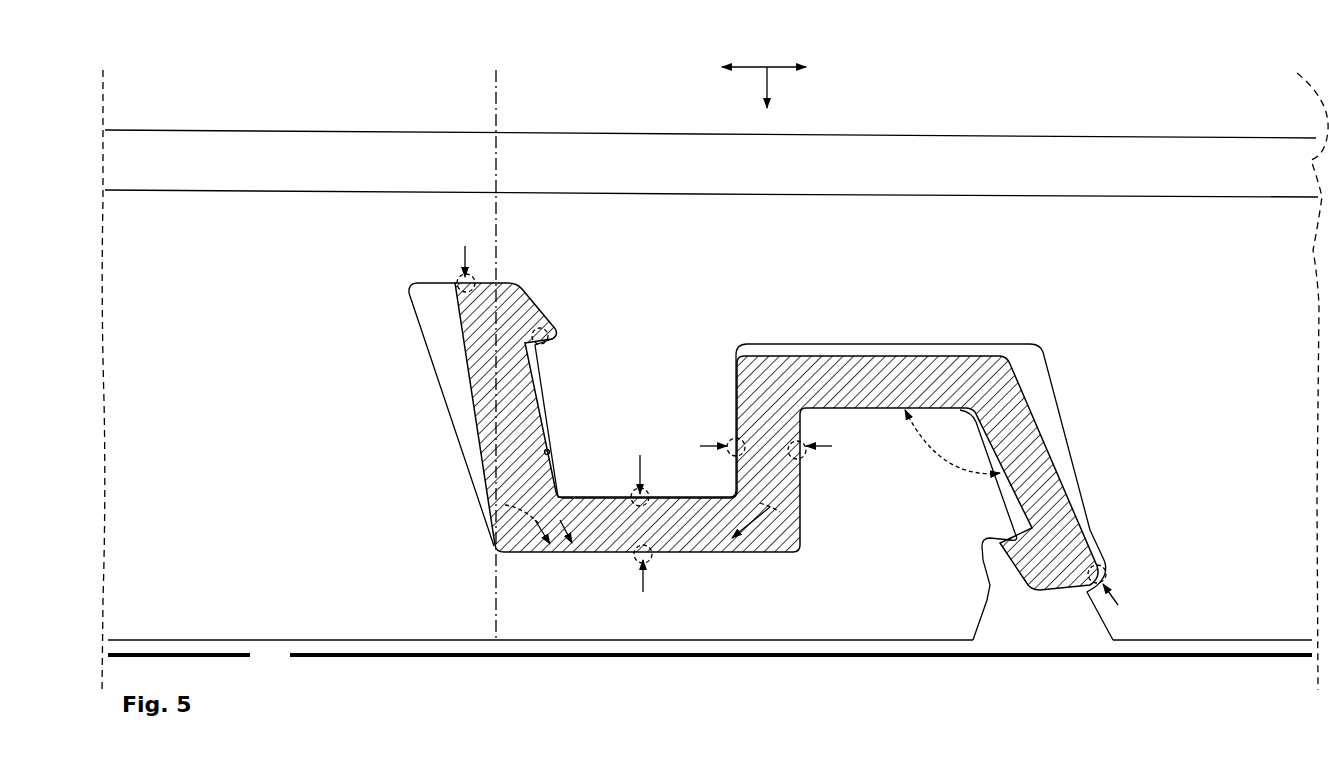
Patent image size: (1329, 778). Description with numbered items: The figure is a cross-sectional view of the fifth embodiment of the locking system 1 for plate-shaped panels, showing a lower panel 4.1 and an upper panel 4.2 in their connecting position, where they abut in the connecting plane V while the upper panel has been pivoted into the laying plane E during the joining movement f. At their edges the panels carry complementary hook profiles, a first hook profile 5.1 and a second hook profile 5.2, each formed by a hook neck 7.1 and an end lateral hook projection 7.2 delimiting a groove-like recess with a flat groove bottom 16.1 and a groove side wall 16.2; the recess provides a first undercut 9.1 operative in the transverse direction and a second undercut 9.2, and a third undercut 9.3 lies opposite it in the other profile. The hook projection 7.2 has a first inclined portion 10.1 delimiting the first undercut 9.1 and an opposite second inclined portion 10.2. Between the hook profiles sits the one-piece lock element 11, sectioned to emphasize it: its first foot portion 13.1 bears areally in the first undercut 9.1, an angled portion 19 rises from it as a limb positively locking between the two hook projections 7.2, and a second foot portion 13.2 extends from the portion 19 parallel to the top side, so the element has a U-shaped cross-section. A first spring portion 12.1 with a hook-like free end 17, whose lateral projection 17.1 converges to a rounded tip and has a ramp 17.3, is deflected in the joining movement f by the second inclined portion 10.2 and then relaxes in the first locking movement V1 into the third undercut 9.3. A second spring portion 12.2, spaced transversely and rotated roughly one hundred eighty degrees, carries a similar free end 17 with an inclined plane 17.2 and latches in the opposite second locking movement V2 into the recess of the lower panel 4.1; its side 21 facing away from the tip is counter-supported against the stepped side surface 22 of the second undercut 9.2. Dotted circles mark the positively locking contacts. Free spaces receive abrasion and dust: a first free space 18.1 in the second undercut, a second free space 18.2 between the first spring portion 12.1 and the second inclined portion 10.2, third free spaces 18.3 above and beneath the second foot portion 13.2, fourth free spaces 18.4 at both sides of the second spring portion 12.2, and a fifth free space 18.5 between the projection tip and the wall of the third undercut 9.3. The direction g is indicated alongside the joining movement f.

The locking system 1 is at (147, 88).
The lower panel 4.1 is at (213, 108).
The upper panel 4.2 is at (1198, 112).
The first hook profile 5.1 is at (283, 128).
The second hook profile 5.2 is at (1128, 127).
The hook neck 7.1 is at (655, 179).
The hook projection 7.2 is at (892, 186).
The first undercut 9.1 is at (543, 405).
The second undercut 9.2 is at (410, 290).
The third undercut 9.3 is at (535, 338).
The first inclined portion 10.1 is at (778, 475).
The second inclined portion 10.2 is at (550, 452).
The lock element 11 is at (446, 276).
The first spring portion 12.1 is at (521, 283).
The second spring portion 12.2 is at (1043, 430).
The first foot portion 13.1 is at (603, 493).
The second foot portion 13.2 is at (917, 357).
The groove bottom 16.1 is at (437, 357).
The groove side wall 16.2 is at (844, 507).
The free end 17 is at (1092, 530).
The lateral projection 17.1 is at (538, 298).
The inclined plane 17.2 is at (558, 330).
The ramp 17.3 is at (537, 323).
The first free space 18.1 is at (418, 308).
The second free space 18.2 is at (546, 435).
The third free space 18.3 is at (848, 412).
The fourth free space 18.4 is at (1025, 512).
The fifth free space 18.5 is at (990, 568).
The portion 19 is at (737, 410).
The side 21 is at (1100, 548).
The side surface 22 is at (1108, 572).
The laying plane E is at (710, 658).
The connecting plane V is at (494, 355).
The first locking movement V1 is at (457, 318).
The second locking movement V2 is at (1058, 462).
The transverse direction g is at (764, 58).
The joining movement f is at (776, 89).